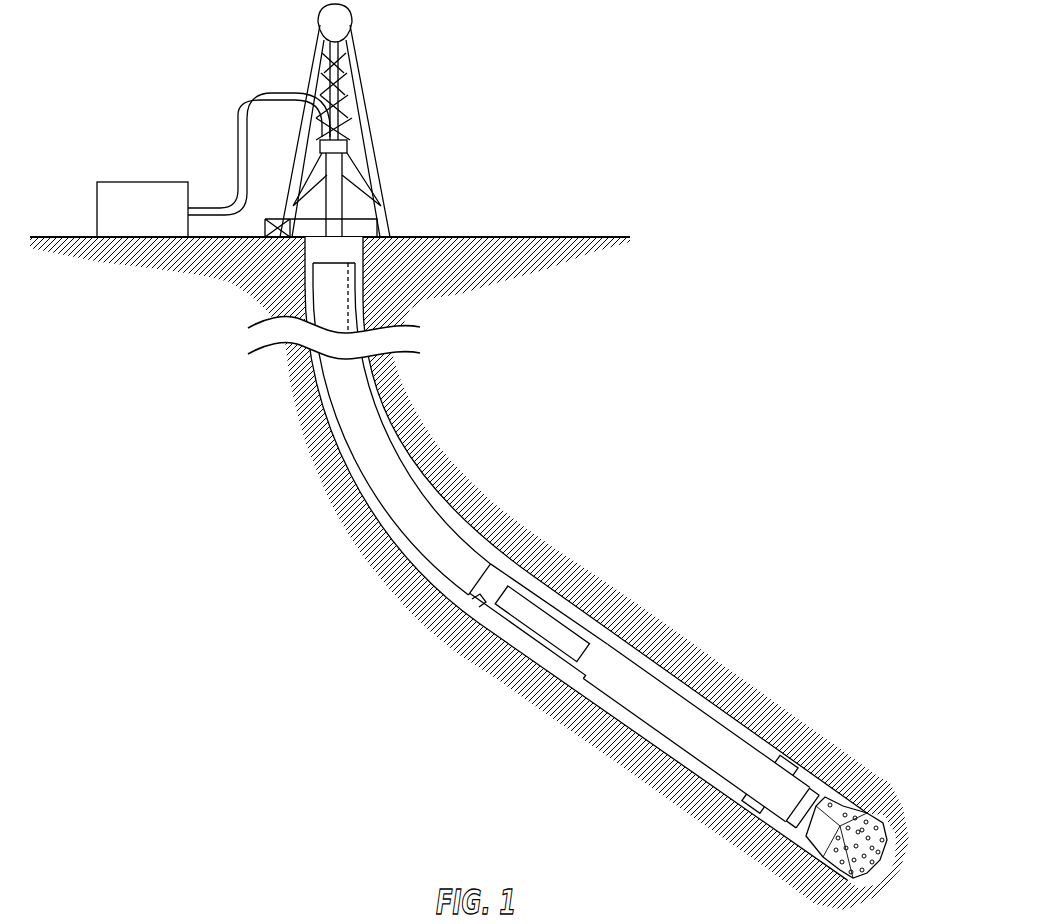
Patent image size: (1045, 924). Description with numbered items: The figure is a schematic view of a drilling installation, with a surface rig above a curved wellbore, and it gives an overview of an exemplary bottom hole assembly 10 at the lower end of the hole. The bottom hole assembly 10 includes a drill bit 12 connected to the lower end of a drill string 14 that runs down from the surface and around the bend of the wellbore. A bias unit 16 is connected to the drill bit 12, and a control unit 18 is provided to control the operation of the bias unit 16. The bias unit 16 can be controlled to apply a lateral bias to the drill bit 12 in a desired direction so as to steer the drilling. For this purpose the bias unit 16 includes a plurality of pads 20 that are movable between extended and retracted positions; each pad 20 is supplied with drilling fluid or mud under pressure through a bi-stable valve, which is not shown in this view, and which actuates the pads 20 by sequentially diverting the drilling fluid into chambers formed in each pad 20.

The bottom hole assembly 10 is at (741, 42).
The drill bit 12 is at (862, 813).
The drill string 14 is at (418, 500).
The bias unit 16 is at (711, 718).
The control unit 18 is at (543, 614).
The pads 20 is at (789, 762).